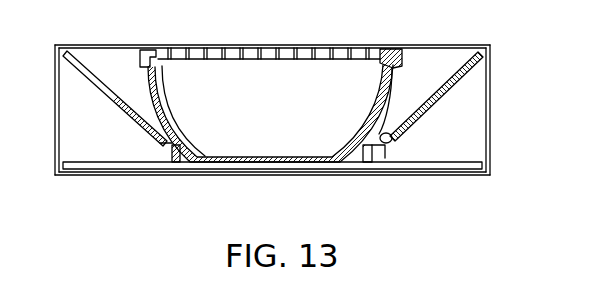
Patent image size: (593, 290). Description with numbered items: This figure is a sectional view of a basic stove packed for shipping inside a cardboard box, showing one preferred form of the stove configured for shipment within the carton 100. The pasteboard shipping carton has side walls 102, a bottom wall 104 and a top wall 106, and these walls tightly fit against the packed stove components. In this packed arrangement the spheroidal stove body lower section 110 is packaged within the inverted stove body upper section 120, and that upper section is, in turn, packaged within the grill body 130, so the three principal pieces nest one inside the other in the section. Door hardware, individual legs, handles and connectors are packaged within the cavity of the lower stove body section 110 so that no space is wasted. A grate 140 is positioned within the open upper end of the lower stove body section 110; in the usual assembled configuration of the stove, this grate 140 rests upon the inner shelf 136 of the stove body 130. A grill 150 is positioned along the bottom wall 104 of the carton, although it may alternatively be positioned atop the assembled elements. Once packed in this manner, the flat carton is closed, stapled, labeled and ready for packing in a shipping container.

The carton 100 is at (503, 130).
The side walls 102 is at (490, 163).
The bottom wall 104 is at (437, 175).
The top wall 106 is at (417, 47).
The stove body lower section 110 is at (357, 158).
The stove body upper section 120 is at (393, 88).
The grill body 130 is at (440, 94).
The inner shelf 136 is at (390, 143).
The grate 140 is at (282, 52).
The grill 150 is at (113, 167).